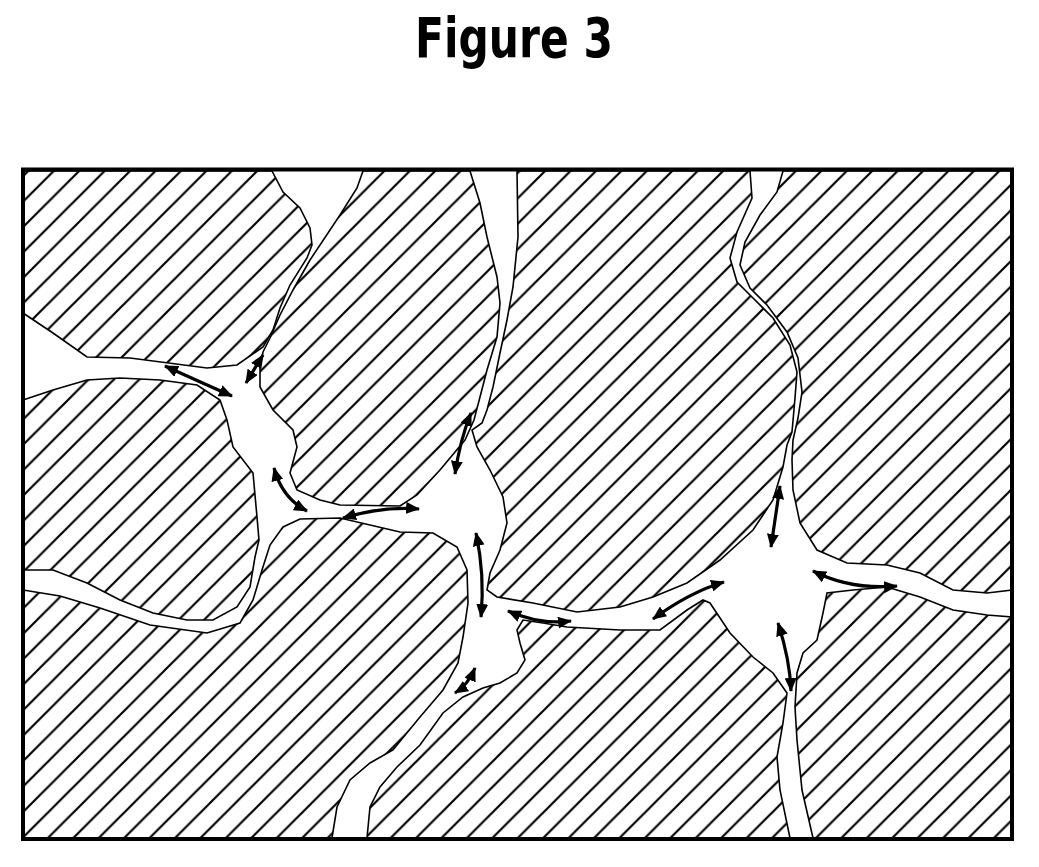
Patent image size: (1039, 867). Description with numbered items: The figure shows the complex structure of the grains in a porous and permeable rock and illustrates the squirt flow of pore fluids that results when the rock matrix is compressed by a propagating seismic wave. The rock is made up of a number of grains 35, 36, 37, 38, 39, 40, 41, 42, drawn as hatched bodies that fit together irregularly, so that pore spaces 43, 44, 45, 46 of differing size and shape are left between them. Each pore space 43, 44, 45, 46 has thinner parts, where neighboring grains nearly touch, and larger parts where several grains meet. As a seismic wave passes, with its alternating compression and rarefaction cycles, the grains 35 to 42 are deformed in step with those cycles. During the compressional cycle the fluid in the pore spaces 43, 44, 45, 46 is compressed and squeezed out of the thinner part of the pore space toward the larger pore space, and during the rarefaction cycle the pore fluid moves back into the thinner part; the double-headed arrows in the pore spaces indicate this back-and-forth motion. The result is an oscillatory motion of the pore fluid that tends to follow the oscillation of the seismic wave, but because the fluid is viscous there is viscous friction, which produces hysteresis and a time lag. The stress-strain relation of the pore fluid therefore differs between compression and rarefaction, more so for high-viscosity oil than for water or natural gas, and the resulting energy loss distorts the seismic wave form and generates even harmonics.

The grain 35 is at (167, 269).
The grain 36 is at (141, 499).
The grain 37 is at (245, 678).
The grain 38 is at (380, 338).
The grain 39 is at (634, 391).
The grain 40 is at (578, 719).
The grain 41 is at (876, 382).
The grain 42 is at (903, 712).
The pore space 43 is at (292, 436).
The pore space 44 is at (458, 515).
The pore space 45 is at (775, 588).
The pore space 46 is at (513, 652).